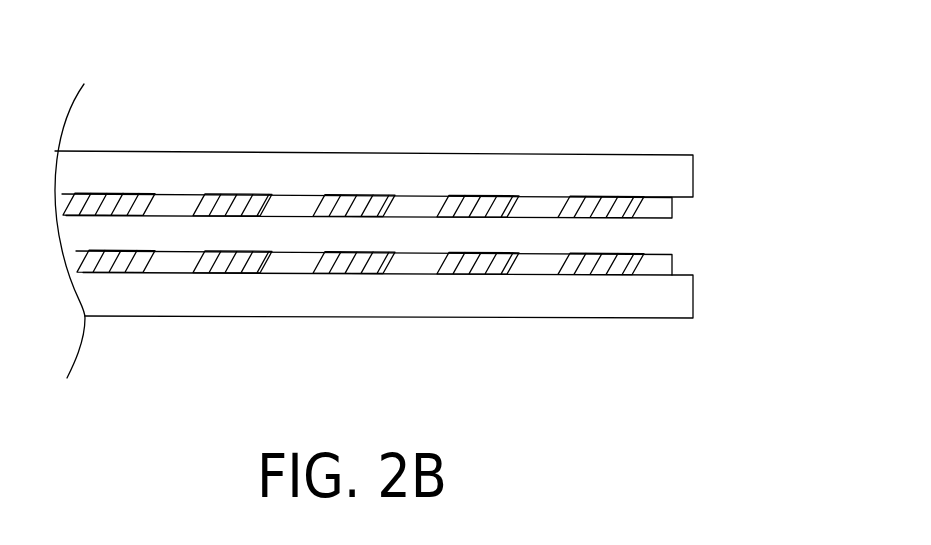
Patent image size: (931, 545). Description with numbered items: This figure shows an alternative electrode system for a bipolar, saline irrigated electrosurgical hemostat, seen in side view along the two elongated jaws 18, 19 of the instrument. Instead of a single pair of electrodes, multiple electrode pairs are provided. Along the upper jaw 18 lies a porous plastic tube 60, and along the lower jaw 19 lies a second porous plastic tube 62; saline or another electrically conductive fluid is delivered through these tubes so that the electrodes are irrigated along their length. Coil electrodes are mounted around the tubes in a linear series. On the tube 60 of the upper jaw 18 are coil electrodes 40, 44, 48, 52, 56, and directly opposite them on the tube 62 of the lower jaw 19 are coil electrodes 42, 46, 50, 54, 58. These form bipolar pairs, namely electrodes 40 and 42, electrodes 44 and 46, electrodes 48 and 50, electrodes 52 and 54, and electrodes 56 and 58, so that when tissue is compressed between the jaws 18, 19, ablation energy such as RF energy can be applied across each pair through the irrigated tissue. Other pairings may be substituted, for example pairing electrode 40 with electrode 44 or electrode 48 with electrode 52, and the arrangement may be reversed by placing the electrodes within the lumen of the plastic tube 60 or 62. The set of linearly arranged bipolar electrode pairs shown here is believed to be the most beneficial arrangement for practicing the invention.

The jaw 18 is at (122, 150).
The jaw 19 is at (122, 314).
The coil electrode 40 is at (120, 193).
The coil electrode 42 is at (115, 272).
The coil electrode 44 is at (240, 194).
The coil electrode 46 is at (236, 273).
The coil electrode 48 is at (360, 195).
The coil electrode 50 is at (358, 273).
The coil electrode 52 is at (481, 196).
The coil electrode 54 is at (478, 274).
The coil electrode 56 is at (602, 196).
The coil electrode 58 is at (598, 275).
The porous plastic tube 60 is at (632, 215).
The porous plastic tube 62 is at (632, 258).